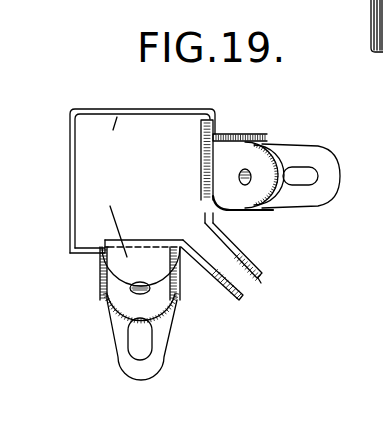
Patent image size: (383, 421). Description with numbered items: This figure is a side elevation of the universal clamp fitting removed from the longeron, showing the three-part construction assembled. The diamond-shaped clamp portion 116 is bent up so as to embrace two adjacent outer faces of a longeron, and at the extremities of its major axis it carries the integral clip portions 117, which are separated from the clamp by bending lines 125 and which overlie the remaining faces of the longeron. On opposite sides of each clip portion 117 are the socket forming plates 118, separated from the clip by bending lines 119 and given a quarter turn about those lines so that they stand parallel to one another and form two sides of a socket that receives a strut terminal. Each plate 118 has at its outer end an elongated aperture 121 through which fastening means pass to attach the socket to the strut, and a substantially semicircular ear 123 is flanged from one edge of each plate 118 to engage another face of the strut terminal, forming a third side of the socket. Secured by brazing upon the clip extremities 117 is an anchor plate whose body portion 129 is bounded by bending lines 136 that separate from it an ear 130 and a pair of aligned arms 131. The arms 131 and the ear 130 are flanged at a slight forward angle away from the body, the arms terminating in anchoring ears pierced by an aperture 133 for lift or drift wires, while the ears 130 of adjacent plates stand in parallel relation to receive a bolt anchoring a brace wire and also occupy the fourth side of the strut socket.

The diamond-shaped clamp portion 116 is at (77, 158).
The clip portions 117 is at (217, 128).
The socket forming plates 118 is at (217, 264).
The bending lines 119 is at (227, 217).
The elongated aperture 121 is at (318, 176).
The semicircular ears 123 is at (262, 137).
The bending lines 125 is at (198, 237).
The body portion 129 is at (200, 170).
The ear 130 is at (260, 280).
The alined arms 131 is at (107, 221).
The aperture 133 is at (250, 180).
The bending lines 136 is at (232, 252).